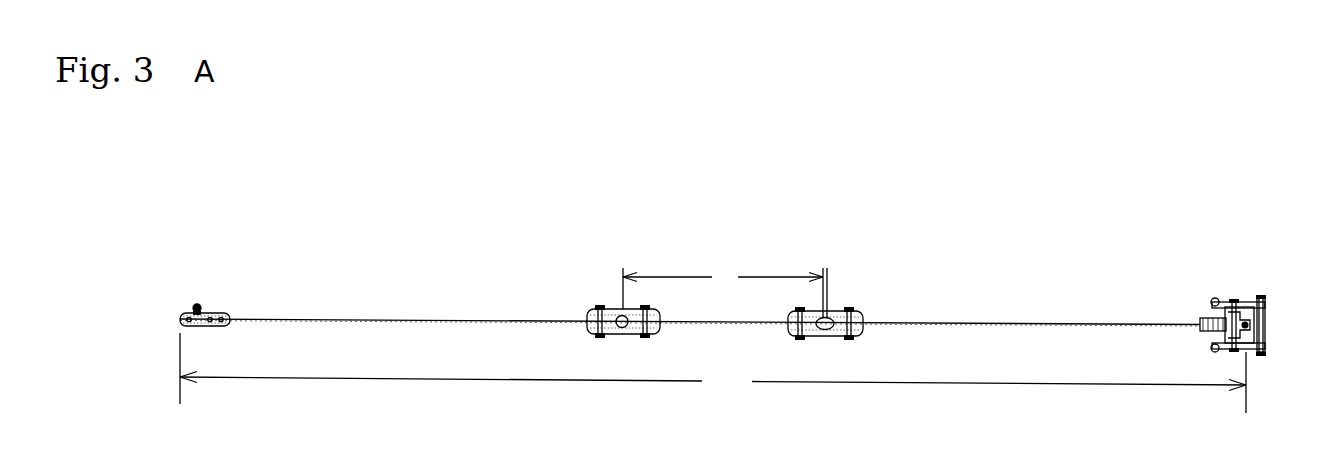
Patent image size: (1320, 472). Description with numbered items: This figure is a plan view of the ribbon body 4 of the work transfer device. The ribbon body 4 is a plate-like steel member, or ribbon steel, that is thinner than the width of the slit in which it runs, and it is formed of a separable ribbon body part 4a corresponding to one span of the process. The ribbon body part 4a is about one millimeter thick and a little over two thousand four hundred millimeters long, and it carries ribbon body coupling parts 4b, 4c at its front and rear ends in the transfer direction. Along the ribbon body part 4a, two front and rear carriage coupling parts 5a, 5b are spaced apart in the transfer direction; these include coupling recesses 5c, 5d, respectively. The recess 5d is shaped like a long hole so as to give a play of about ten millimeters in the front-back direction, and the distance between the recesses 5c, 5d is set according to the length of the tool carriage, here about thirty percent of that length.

The ribbon body 4 is at (304, 238).
The ribbon body part 4a is at (445, 318).
The ribbon body coupling part 4b is at (1264, 326).
The ribbon body coupling part 4c is at (214, 311).
The carriage coupling part 5a is at (612, 308).
The carriage coupling part 5b is at (813, 312).
The coupling recess 5c is at (615, 335).
The coupling recess 5d is at (832, 313).